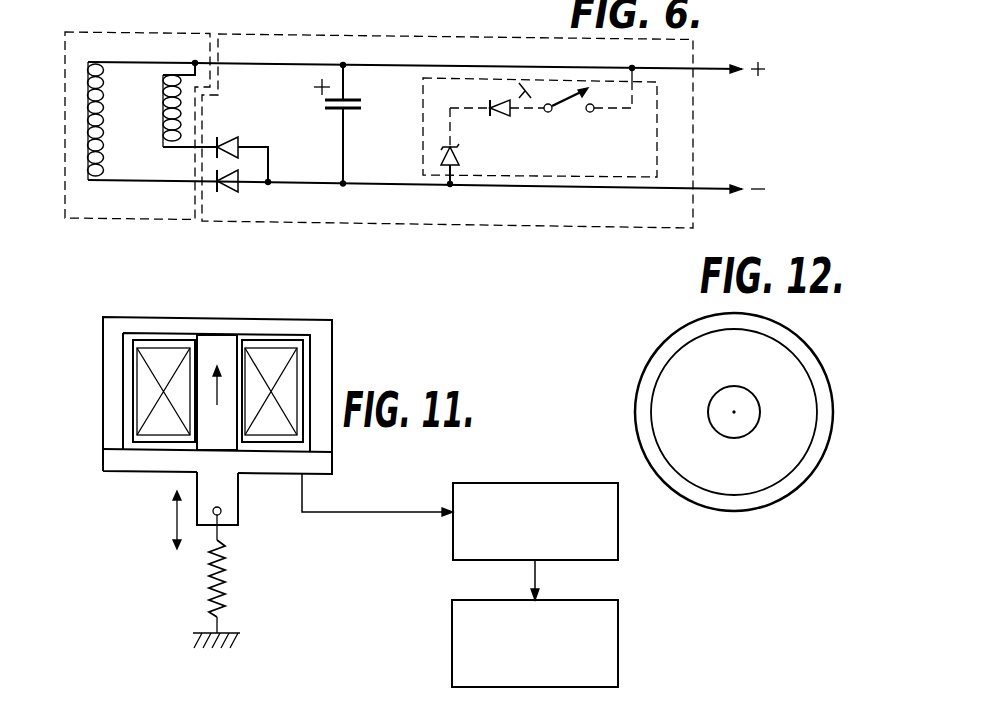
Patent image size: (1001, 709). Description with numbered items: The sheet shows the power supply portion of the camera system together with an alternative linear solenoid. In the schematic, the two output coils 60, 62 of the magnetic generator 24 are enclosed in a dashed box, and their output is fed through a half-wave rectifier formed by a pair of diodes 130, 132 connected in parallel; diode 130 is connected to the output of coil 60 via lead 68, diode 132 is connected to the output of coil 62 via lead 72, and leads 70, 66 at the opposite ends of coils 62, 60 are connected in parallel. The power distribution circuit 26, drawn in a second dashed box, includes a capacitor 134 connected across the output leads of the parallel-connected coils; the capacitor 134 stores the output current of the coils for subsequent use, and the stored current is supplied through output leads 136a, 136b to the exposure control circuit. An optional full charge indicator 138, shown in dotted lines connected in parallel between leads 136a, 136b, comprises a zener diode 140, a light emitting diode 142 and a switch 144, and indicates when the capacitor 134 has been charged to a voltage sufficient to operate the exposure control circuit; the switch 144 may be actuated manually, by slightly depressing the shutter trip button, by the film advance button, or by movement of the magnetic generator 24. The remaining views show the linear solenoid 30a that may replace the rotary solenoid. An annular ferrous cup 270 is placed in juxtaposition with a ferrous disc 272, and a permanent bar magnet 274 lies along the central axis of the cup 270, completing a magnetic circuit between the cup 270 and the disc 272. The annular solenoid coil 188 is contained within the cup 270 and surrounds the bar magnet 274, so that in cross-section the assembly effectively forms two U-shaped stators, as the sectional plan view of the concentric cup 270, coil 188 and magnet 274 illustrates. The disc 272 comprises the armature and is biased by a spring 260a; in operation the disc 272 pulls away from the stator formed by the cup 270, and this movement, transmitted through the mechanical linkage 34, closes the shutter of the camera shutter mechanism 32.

In FIG. 6, the magnetic generator 24 is at (152, 32).
In FIG. 6, the power distribution circuit 26 is at (350, 35).
In FIG. 6, the coil 60 is at (160, 122).
In FIG. 6, the coil 62 is at (85, 112).
In FIG. 6, the lead 66 is at (180, 75).
In FIG. 6, the lead 68 is at (175, 147).
In FIG. 6, the lead 70 is at (118, 62).
In FIG. 6, the lead 72 is at (120, 181).
In FIG. 6, the diode 130 is at (238, 138).
In FIG. 6, the diode 132 is at (235, 192).
In FIG. 6, the capacitor 134 is at (360, 100).
In FIG. 6, the output lead 136a is at (708, 68).
In FIG. 6, the output lead 136b is at (700, 190).
In FIG. 6, the full charge indicator 138 is at (518, 126).
In FIG. 6, the zener diode 140 is at (460, 155).
In FIG. 6, the light emitting diode 142 is at (504, 116).
In FIG. 6, the switch 144 is at (569, 106).
In FIG. 11, the annular solenoid coil 188 is at (145, 386).
In FIG. 12, the annular solenoid coil 188 is at (668, 395).
In FIG. 11, the annular ferrous cup 270 is at (230, 317).
In FIG. 12, the annular ferrous cup 270 is at (827, 407).
In FIG. 11, the ferrous disc 272 is at (126, 467).
In FIG. 11, the permanent bar magnet 274 is at (192, 347).
In FIG. 12, the permanent bar magnet 274 is at (738, 390).
In FIG. 11, the linear solenoid 30a is at (237, 407).
In FIG. 12, the linear solenoid 30a is at (741, 412).
In FIG. 11, the spring 260a is at (225, 572).
In FIG. 11, the camera shutter mechanism 32 is at (612, 625).
In FIG. 11, the mechanical linkage 34 is at (618, 500).